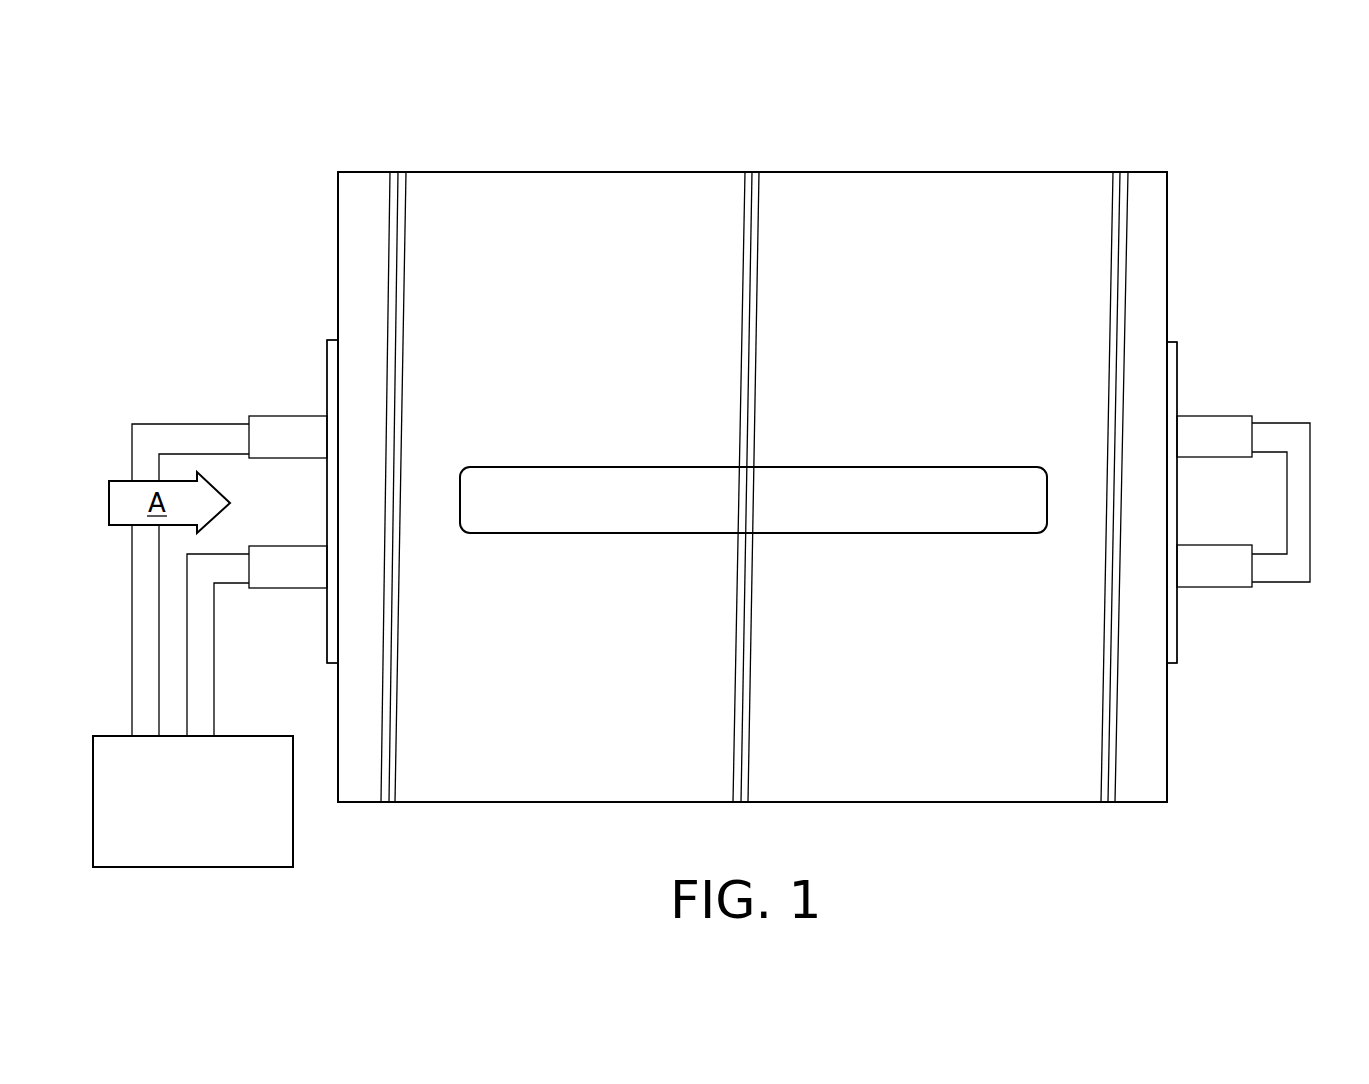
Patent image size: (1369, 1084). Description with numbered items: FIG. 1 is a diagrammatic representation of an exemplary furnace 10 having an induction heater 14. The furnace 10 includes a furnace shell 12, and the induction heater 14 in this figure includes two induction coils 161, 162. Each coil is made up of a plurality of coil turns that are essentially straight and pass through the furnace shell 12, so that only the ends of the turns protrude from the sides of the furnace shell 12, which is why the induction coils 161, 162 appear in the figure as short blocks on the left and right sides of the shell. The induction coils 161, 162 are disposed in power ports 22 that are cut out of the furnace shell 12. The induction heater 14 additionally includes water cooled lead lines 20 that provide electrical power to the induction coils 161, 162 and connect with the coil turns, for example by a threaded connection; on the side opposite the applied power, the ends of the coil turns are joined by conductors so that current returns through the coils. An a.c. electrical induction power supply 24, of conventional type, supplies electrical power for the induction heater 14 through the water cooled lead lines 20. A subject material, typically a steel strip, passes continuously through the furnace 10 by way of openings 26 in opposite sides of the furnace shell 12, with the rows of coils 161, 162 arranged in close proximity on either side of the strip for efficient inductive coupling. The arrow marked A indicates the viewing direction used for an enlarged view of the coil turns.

The furnace 10 is at (262, 220).
The furnace shell 12 is at (834, 326).
The induction heater 14 is at (195, 396).
The induction coil 161 is at (1240, 368).
The induction coil 162 is at (1240, 630).
The water cooled lead lines 20 is at (200, 614).
The power ports 22 is at (327, 510).
The a.c. electrical induction power supply 24 is at (178, 817).
The openings 26 is at (792, 520).